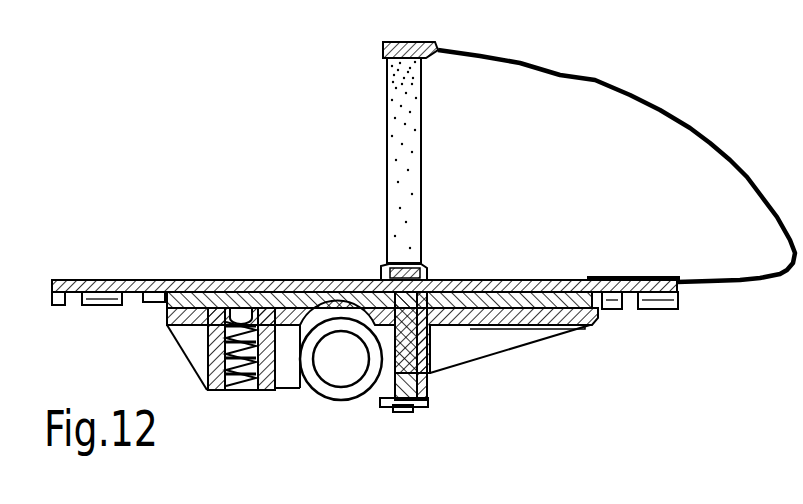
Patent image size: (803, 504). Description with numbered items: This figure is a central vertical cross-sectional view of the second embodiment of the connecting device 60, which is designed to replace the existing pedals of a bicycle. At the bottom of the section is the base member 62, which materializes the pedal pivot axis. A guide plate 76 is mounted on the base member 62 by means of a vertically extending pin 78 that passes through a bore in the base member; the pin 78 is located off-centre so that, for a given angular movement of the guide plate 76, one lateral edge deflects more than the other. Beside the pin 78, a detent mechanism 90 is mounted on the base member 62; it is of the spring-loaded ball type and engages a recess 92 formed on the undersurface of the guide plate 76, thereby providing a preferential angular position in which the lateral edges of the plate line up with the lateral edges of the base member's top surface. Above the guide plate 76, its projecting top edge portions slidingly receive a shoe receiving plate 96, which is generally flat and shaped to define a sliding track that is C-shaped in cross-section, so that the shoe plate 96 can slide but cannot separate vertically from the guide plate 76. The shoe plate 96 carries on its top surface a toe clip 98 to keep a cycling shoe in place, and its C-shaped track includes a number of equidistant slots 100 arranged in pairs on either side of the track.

The connecting device 60 is at (200, 175).
The base member 62 is at (495, 350).
The guide plate 76 is at (598, 322).
The pin 78 is at (420, 397).
The detent mechanism 90 is at (236, 420).
The recess 92 is at (258, 281).
The shoe receiving plate 96 is at (85, 279).
The toe clip 98 is at (596, 79).
The slots 100 is at (133, 293).